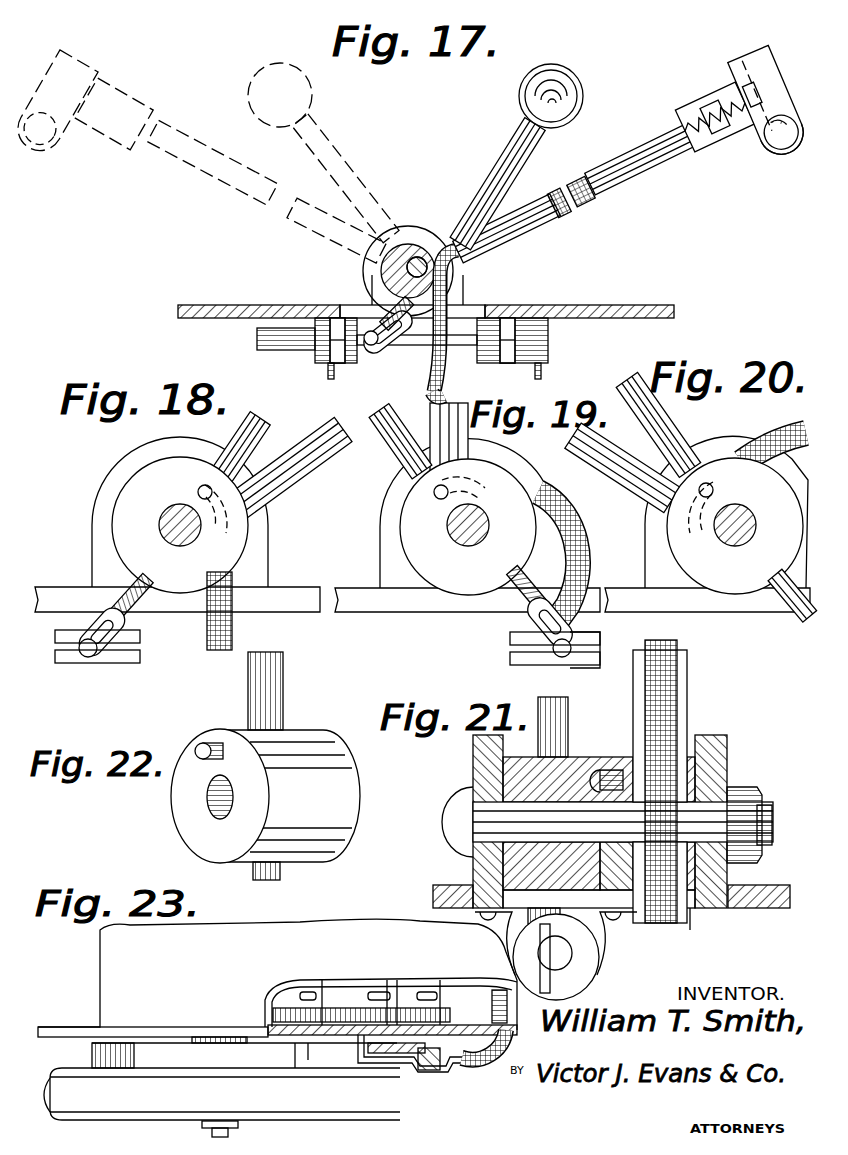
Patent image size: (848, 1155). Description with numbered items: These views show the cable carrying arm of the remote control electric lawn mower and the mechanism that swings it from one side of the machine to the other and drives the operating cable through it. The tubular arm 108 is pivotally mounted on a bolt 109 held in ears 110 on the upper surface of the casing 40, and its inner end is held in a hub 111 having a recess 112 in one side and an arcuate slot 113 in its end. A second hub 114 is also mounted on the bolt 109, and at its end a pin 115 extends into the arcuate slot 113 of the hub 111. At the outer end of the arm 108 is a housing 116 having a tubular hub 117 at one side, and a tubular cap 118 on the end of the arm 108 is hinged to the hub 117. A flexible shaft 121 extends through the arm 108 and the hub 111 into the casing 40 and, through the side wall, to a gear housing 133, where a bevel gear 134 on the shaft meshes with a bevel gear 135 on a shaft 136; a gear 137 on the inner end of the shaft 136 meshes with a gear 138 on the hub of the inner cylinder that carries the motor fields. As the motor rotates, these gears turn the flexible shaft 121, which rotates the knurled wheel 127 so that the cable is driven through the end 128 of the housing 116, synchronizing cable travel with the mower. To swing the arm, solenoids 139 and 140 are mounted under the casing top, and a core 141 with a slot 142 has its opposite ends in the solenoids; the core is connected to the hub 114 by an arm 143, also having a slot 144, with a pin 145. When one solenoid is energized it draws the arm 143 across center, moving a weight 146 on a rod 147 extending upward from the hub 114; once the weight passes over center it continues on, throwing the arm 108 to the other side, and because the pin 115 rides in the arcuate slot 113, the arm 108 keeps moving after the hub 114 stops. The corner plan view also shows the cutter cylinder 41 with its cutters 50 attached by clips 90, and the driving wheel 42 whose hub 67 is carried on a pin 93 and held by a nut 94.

In FIG. 17, the casing 40 is at (667, 297).
In FIG. 18, the casing 40 is at (50, 587).
In FIG. 19, the casing 40 is at (410, 606).
In FIG. 20, the casing 40 is at (620, 598).
In FIG. 21, the casing 40 is at (778, 885).
In FIG. 23, the casing 40 is at (255, 927).
In FIG. 23, the cutter cylinder 41 is at (348, 980).
In FIG. 23, the driving wheel 42 is at (55, 1080).
In FIG. 23, the cutters 50 is at (308, 992).
In FIG. 23, the hub 67 is at (135, 1050).
In FIG. 23, the clips 90 is at (300, 995).
In FIG. 23, the pin 93 is at (230, 1133).
In FIG. 23, the nut 94 is at (205, 1125).
In FIG. 17, the arm 108 is at (600, 176).
In FIG. 18, the arm 108 is at (312, 436).
In FIG. 19, the arm 108 is at (458, 405).
In FIG. 20, the arm 108 is at (622, 488).
In FIG. 21, the arm 108 is at (690, 668).
In FIG. 17, the bolt 109 is at (388, 266).
In FIG. 18, the bolt 109 is at (160, 522).
In FIG. 19, the bolt 109 is at (447, 527).
In FIG. 20, the bolt 109 is at (756, 528).
In FIG. 21, the bolt 109 is at (445, 818).
In FIG. 22, the bolt 109 is at (220, 797).
In FIG. 17, the ears 110 is at (372, 281).
In FIG. 18, the ears 110 is at (268, 530).
In FIG. 19, the ears 110 is at (388, 494).
In FIG. 20, the ears 110 is at (735, 438).
In FIG. 21, the ears 110 is at (473, 760).
In FIG. 17, the hub 111 is at (414, 244).
In FIG. 21, the hub 111 is at (690, 918).
In FIG. 17, the recess 112 is at (456, 277).
In FIG. 18, the arcuate slot 113 is at (220, 535).
In FIG. 19, the arcuate slot 113 is at (482, 490).
In FIG. 20, the arcuate slot 113 is at (686, 520).
In FIG. 21, the arcuate slot 113 is at (612, 770).
In FIG. 18, the hub 114 is at (130, 475).
In FIG. 19, the hub 114 is at (418, 550).
In FIG. 20, the hub 114 is at (676, 548).
In FIG. 21, the hub 114 is at (516, 757).
In FIG. 22, the hub 114 is at (330, 745).
In FIG. 18, the pin 115 is at (199, 490).
In FIG. 19, the pin 115 is at (439, 498).
In FIG. 21, the pin 115 is at (606, 770).
In FIG. 22, the pin 115 is at (208, 742).
In FIG. 17, the housing 116 is at (757, 50).
In FIG. 20, the housing 116 is at (714, 492).
In FIG. 17, the tubular hub 117 is at (718, 90).
In FIG. 17, the tubular cap 118 is at (693, 106).
In FIG. 17, the flexible shaft 121 is at (565, 200).
In FIG. 18, the flexible shaft 121 is at (233, 625).
In FIG. 19, the flexible shaft 121 is at (556, 490).
In FIG. 20, the flexible shaft 121 is at (790, 430).
In FIG. 23, the flexible shaft 121 is at (500, 1040).
In FIG. 17, the knurled wheel 127 is at (772, 142).
In FIG. 17, the end 128 is at (779, 154).
In FIG. 23, the gear housing 133 is at (400, 1053).
In FIG. 23, the bevel gear 134 is at (436, 1072).
In FIG. 23, the bevel gear 135 is at (408, 1072).
In FIG. 23, the shaft 136 is at (410, 992).
In FIG. 23, the gear 137 is at (492, 1004).
In FIG. 23, the gear 138 is at (273, 1012).
In FIG. 17, the solenoid 139 is at (315, 350).
In FIG. 21, the solenoid 139 is at (600, 945).
In FIG. 17, the solenoid 140 is at (548, 330).
In FIG. 17, the core 141 is at (386, 352).
In FIG. 18, the core 141 is at (136, 660).
In FIG. 19, the core 141 is at (596, 640).
In FIG. 20, the core 141 is at (598, 640).
In FIG. 21, the core 141 is at (590, 978).
In FIG. 17, the slot 142 is at (390, 345).
In FIG. 18, the slot 142 is at (142, 640).
In FIG. 19, the slot 142 is at (510, 650).
In FIG. 17, the arm 143 is at (380, 305).
In FIG. 18, the arm 143 is at (138, 600).
In FIG. 19, the arm 143 is at (528, 582).
In FIG. 20, the arm 143 is at (795, 618).
In FIG. 21, the arm 143 is at (590, 925).
In FIG. 22, the arm 143 is at (280, 872).
In FIG. 18, the slot 144 is at (104, 650).
In FIG. 19, the slot 144 is at (528, 628).
In FIG. 17, the pin 145 is at (366, 346).
In FIG. 18, the pin 145 is at (80, 655).
In FIG. 19, the pin 145 is at (565, 657).
In FIG. 21, the pin 145 is at (572, 958).
In FIG. 17, the weight 146 is at (576, 80).
In FIG. 17, the rod 147 is at (498, 158).
In FIG. 18, the rod 147 is at (232, 430).
In FIG. 19, the rod 147 is at (392, 450).
In FIG. 20, the rod 147 is at (652, 428).
In FIG. 21, the rod 147 is at (560, 710).
In FIG. 22, the rod 147 is at (278, 672).